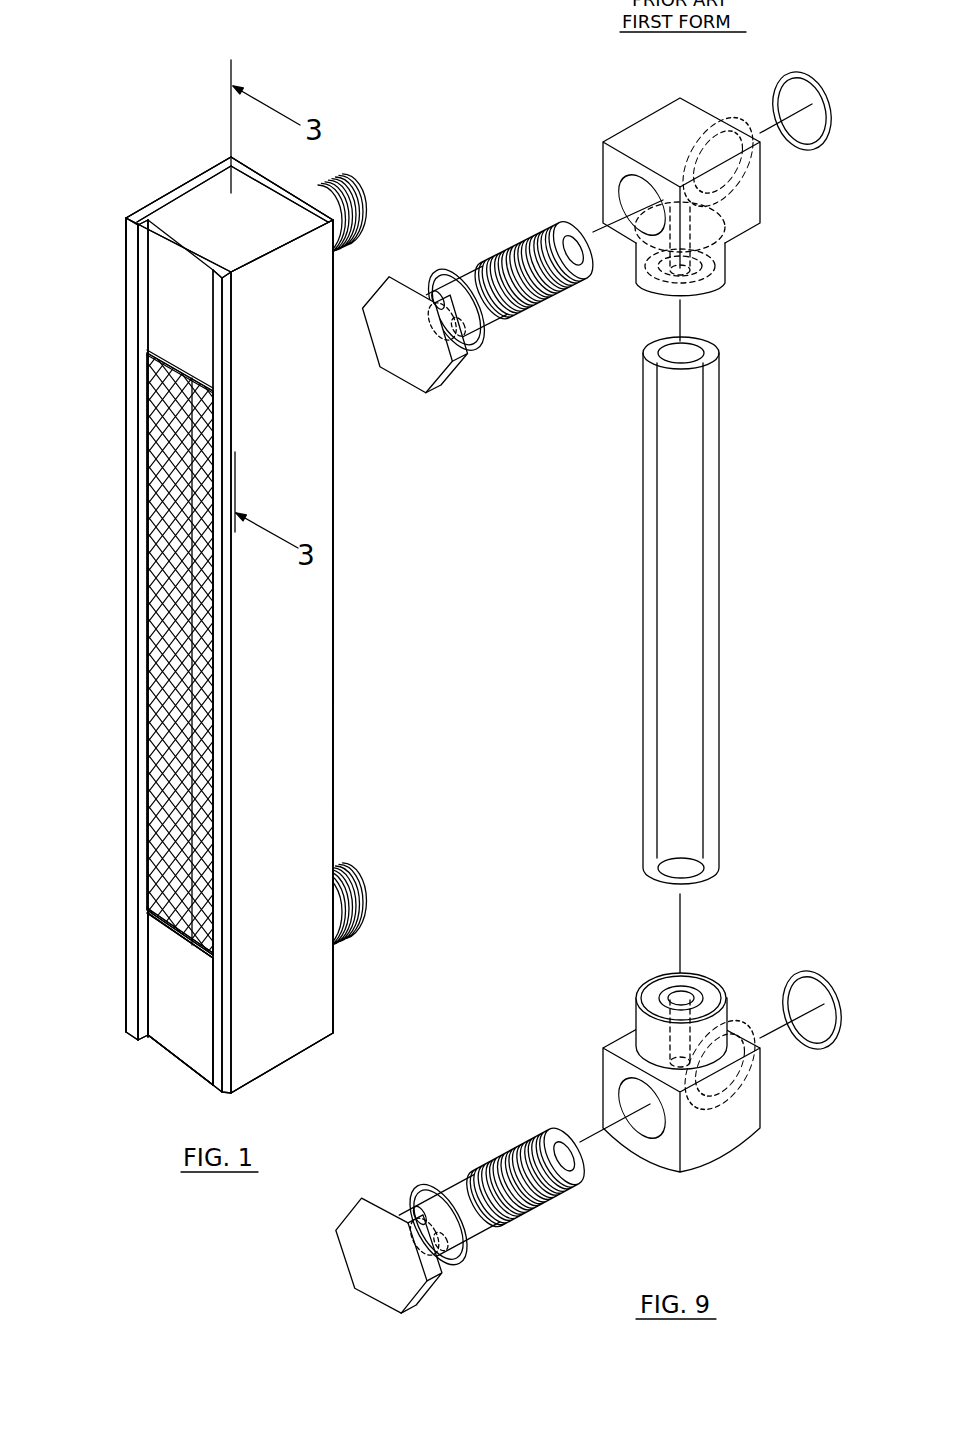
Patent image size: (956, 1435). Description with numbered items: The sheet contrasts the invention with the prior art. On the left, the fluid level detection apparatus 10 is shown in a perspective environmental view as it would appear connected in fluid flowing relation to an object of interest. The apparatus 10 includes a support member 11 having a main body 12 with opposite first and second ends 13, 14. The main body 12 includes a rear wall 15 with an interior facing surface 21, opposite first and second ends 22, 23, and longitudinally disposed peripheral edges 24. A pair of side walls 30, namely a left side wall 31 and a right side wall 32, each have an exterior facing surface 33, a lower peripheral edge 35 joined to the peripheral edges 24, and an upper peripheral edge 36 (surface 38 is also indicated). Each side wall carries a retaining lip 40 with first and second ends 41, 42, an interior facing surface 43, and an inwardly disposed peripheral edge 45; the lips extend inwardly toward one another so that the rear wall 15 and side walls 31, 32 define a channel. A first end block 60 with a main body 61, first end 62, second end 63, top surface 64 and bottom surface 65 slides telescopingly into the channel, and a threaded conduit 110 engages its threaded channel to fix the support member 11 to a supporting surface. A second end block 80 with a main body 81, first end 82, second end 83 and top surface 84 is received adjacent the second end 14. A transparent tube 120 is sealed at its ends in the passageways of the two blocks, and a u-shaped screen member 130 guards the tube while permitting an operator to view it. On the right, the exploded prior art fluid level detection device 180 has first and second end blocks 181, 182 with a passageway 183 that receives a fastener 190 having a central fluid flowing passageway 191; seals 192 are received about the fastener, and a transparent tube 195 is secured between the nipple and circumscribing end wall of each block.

In FIG. 1, the fluid level detection apparatus 10 is at (278, 625).
In FIG. 1, the support member 11 is at (337, 480).
In FIG. 1, the main body 12 is at (312, 612).
In FIG. 1, the first end 13 is at (315, 257).
In FIG. 1, the second end 14 is at (315, 1025).
In FIG. 1, the rear wall 15 is at (335, 438).
In FIG. 1, the interior facing surface 21 is at (270, 200).
In FIG. 1, the first end 22 is at (238, 172).
In FIG. 1, the second end 23 is at (320, 1040).
In FIG. 1, the peripheral edges 24 is at (325, 655).
In FIG. 1, the pair of side walls 30 is at (122, 597).
In FIG. 1, the left side wall 31 is at (125, 215).
In FIG. 1, the right side wall 32 is at (289, 379).
In FIG. 1, the exterior facing surface 33 is at (300, 955).
In FIG. 1, the lower peripheral edge 35 is at (335, 557).
In FIG. 1, the upper peripheral edge 36 is at (126, 333).
In FIG. 1, the side wall 38 is at (330, 735).
In FIG. 1, the retaining lip 40 is at (130, 865).
In FIG. 1, the first end 41 is at (125, 228).
In FIG. 1, the second end 42 is at (128, 1033).
In FIG. 1, the interior facing surface 43 is at (160, 228).
In FIG. 1, the inwardly disposed peripheral edge 45 is at (148, 552).
In FIG. 1, the first end block 60 is at (241, 220).
In FIG. 1, the main body 61 is at (290, 225).
In FIG. 1, the first end 62 is at (208, 197).
In FIG. 1, the second end 63 is at (150, 355).
In FIG. 1, the top surface 64 is at (184, 307).
In FIG. 1, the bottom surface 65 is at (275, 195).
In FIG. 1, the second end block 80 is at (165, 1052).
In FIG. 1, the main body 81 is at (168, 955).
In FIG. 1, the first end 82 is at (148, 898).
In FIG. 1, the second end 83 is at (190, 1068).
In FIG. 1, the top surface 84 is at (178, 998).
In FIG. 1, the threaded conduit 110 is at (365, 203).
In FIG. 1, the transparent tube 120 is at (192, 488).
In FIG. 1, the u-shaped member 130 is at (165, 632).
In FIG. 9, the prior art fluid level detection device 180 is at (604, 681).
In FIG. 9, the first end block 181 is at (704, 215).
In FIG. 9, the second end block 182 is at (701, 1053).
In FIG. 9, the passageway 183 is at (715, 203).
In FIG. 9, the fastener 190 is at (476, 328).
In FIG. 9, the fluid flowing passageway 191 is at (527, 318).
In FIG. 9, the seals 192 is at (797, 77).
In FIG. 9, the transparent tube 195 is at (714, 514).